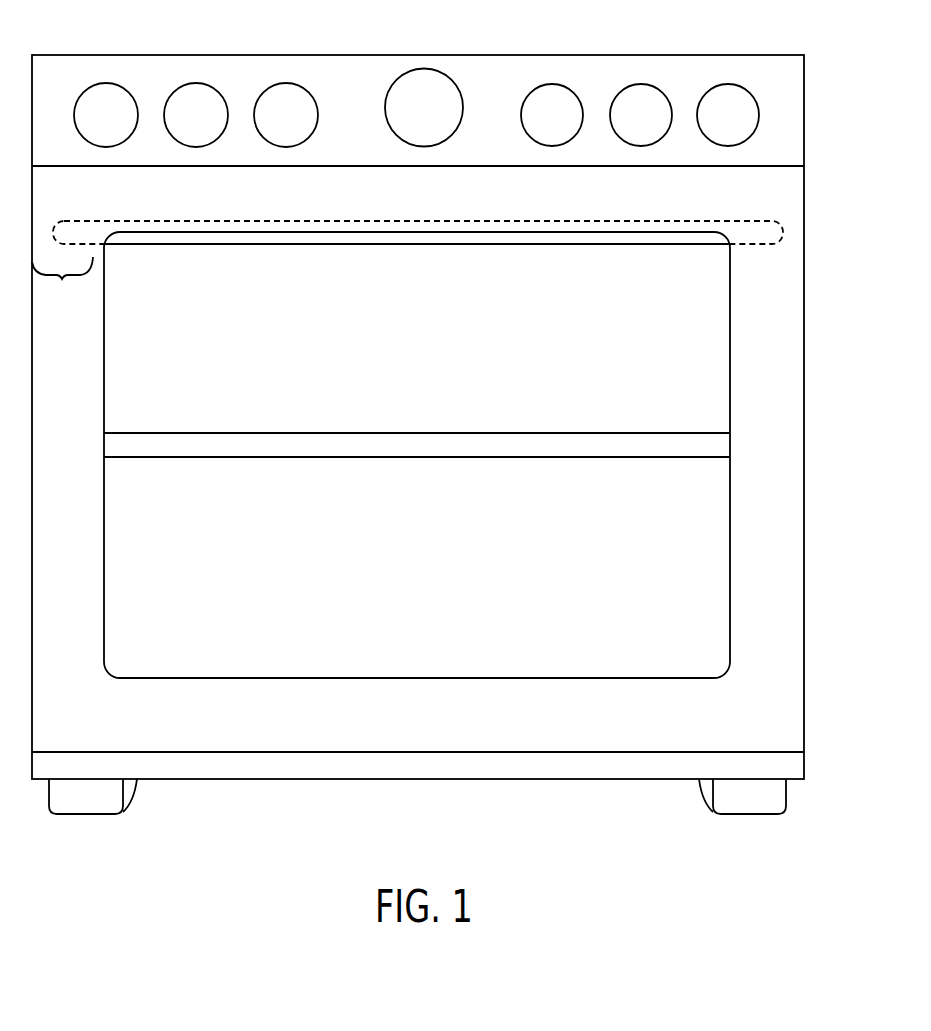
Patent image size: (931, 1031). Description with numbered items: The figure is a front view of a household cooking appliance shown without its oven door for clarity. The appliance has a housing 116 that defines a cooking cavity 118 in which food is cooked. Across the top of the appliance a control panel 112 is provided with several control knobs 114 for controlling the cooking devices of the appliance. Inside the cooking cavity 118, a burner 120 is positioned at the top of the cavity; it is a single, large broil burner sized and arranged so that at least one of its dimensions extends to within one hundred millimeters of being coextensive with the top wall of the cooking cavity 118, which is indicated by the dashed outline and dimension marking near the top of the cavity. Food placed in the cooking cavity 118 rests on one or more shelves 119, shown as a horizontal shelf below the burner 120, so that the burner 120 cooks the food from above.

The control panel 112 is at (787, 120).
The control knobs 114 is at (287, 84).
The housing 116 is at (787, 366).
The cooking cavity 118 is at (104, 601).
The shelves 119 is at (503, 447).
The burner 120 is at (385, 245).